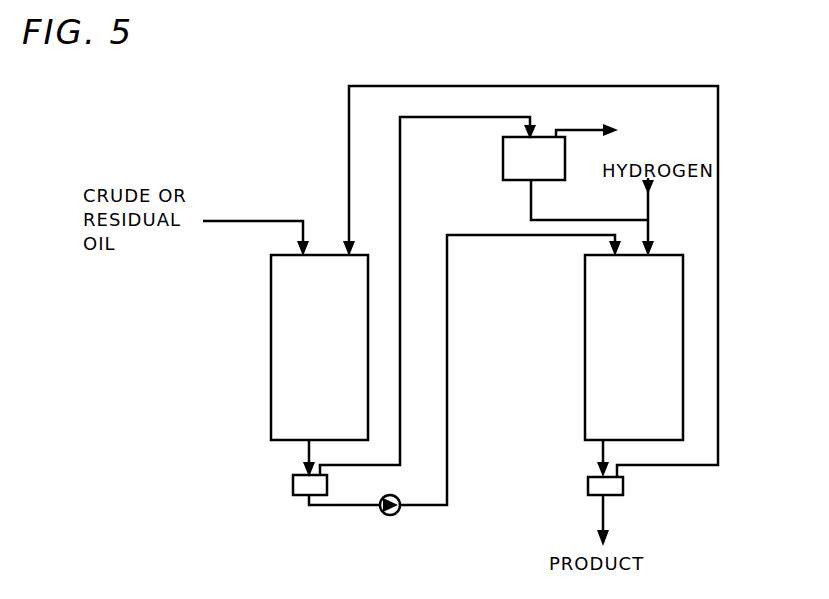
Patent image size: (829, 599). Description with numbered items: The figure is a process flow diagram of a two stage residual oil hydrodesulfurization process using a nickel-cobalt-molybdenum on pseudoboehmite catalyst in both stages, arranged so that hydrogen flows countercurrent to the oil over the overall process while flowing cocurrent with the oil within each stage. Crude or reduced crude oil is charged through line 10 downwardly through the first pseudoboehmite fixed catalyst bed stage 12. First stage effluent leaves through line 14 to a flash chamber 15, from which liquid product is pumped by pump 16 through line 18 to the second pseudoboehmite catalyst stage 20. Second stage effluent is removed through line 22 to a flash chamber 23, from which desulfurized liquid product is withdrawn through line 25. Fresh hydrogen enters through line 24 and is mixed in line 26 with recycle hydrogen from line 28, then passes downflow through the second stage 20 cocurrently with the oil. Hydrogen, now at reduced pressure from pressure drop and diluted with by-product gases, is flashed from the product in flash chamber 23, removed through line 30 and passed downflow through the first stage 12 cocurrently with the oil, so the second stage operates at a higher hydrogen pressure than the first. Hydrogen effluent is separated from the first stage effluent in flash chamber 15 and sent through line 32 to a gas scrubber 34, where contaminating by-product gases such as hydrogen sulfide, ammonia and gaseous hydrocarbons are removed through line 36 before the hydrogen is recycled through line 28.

The line 10 is at (232, 221).
The first pseudoboehmite fixed catalyst bed stage 12 is at (368, 373).
The line 14 is at (304, 450).
The flash chamber 15 is at (335, 481).
The pump 16 is at (389, 515).
The line 18 is at (447, 228).
The second pseudoboehmite catalyst stage 20 is at (684, 282).
The line 22 is at (599, 453).
The flash chamber 23 is at (624, 484).
The line 24 is at (651, 200).
The line 25 is at (605, 519).
The line 26 is at (651, 238).
The line 28 is at (534, 199).
The line 30 is at (718, 447).
The line 32 is at (532, 124).
The gas scrubber 34 is at (503, 184).
The line 36 is at (572, 134).